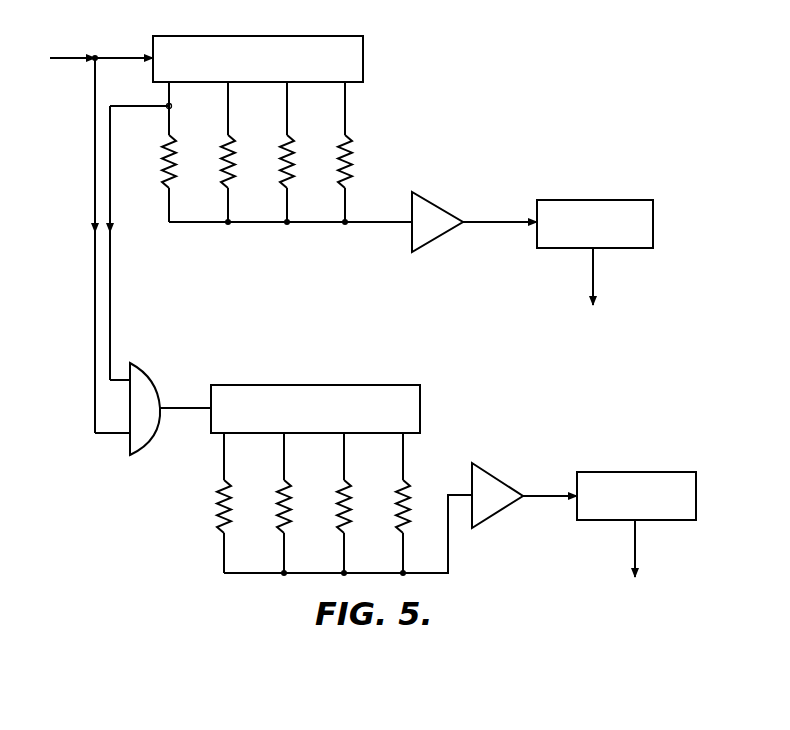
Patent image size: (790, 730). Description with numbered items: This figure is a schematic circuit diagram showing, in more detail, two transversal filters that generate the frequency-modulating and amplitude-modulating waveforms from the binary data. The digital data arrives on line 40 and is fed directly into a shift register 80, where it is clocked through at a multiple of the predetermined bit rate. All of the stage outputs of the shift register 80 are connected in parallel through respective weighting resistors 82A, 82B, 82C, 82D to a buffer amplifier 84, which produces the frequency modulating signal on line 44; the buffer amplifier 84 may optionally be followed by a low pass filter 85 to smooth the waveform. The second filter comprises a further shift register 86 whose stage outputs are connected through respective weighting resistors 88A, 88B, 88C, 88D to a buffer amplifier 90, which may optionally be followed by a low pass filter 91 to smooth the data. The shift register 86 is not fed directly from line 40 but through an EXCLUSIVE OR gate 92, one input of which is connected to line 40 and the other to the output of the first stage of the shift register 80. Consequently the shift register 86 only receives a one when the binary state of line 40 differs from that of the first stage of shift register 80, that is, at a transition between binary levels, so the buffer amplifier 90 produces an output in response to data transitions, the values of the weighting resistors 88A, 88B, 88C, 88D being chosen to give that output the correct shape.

The line 40 is at (86, 57).
The shift register 80 is at (364, 44).
The weighting resistor 82A is at (174, 142).
The weighting resistor 82B is at (233, 145).
The weighting resistor 82C is at (292, 145).
The weighting resistor 82D is at (350, 145).
The buffer amplifier 84 is at (442, 214).
The line 44 is at (498, 222).
The low pass filter 85 is at (638, 200).
The EXCLUSIVE OR gate 92 is at (158, 396).
The shift register 86 is at (421, 402).
The weighting resistor 88A is at (228, 492).
The weighting resistor 88B is at (288, 492).
The weighting resistor 88C is at (348, 492).
The weighting resistor 88D is at (408, 492).
The buffer amplifier 90 is at (508, 483).
The low pass filter 91 is at (676, 472).